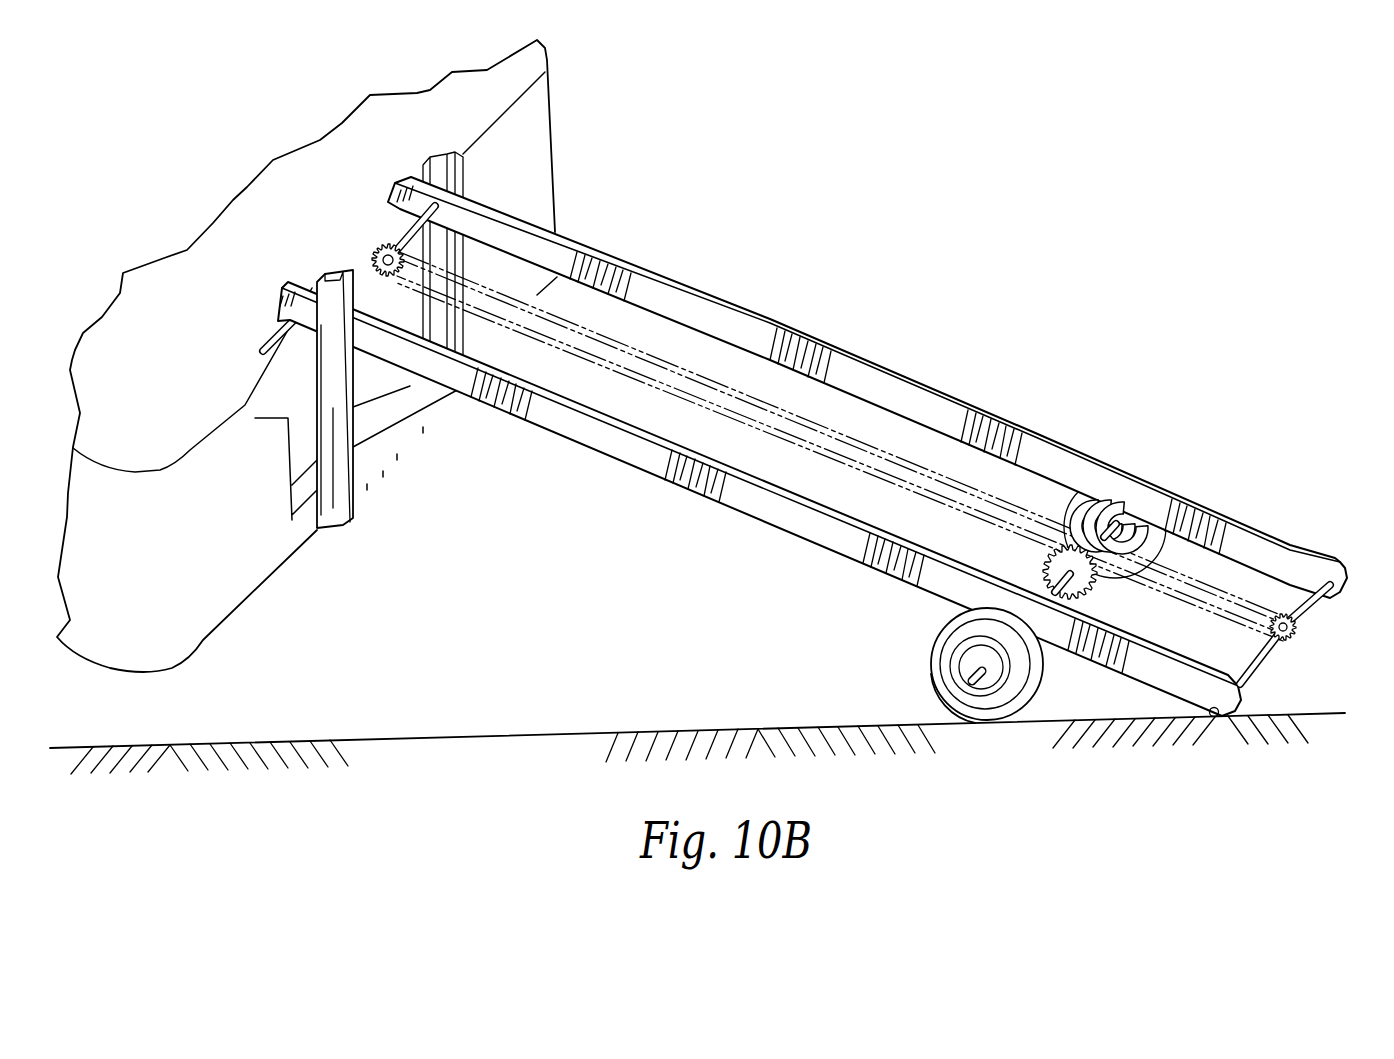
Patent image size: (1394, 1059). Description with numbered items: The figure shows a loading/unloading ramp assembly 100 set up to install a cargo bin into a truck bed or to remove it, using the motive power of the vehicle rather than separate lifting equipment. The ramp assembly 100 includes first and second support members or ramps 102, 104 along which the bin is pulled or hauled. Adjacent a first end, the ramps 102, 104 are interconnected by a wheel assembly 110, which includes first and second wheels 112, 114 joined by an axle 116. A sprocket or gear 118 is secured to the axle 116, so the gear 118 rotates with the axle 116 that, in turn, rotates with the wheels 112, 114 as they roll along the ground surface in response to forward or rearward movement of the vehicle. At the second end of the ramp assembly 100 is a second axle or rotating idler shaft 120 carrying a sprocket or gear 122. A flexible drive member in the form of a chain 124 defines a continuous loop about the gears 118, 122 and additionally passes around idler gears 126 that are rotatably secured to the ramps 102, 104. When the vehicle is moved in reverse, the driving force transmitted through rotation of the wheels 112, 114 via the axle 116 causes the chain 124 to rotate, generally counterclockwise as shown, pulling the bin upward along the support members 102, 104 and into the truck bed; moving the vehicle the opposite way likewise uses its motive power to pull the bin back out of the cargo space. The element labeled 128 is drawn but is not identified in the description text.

The loading/unloading ramp assembly 100 is at (618, 505).
The first support member or ramp 102 is at (780, 510).
The second support member or ramp 104 is at (823, 380).
The wheel assembly 110 is at (983, 468).
The first wheel 112 is at (933, 665).
The second wheel 114 is at (1153, 476).
The axle 116 is at (1043, 566).
The sprocket or gear 118 is at (1050, 545).
The second axle or rotating idler shaft 120 is at (374, 262).
The sprocket or gear 122 is at (382, 249).
The chain 124 is at (648, 335).
The idler gears 126 is at (1284, 615).
The rear shaft 128 is at (1257, 670).